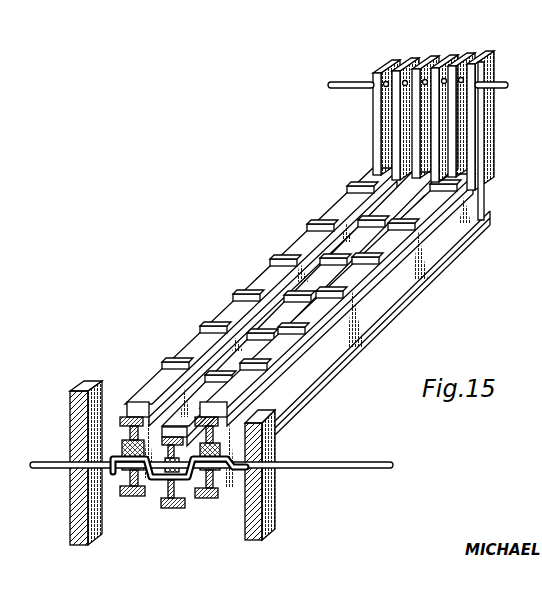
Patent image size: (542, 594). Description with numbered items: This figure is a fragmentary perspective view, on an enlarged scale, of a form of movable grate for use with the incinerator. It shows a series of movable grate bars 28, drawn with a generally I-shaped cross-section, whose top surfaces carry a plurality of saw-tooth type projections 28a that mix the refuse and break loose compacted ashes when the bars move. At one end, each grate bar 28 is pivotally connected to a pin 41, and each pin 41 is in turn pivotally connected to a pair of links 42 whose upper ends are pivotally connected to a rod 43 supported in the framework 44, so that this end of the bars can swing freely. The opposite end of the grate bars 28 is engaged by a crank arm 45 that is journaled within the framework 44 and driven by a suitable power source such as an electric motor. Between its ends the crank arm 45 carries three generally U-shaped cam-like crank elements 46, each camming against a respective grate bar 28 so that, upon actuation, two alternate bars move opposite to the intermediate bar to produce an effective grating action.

The movable grate bar 28 is at (370, 338).
The projections 28a is at (244, 264).
The pin 41 is at (478, 175).
The links 42 is at (481, 63).
The rod 43 is at (502, 88).
The framework 44 is at (70, 406).
The crank arm 45 is at (349, 468).
The crank elements 46 is at (116, 464).